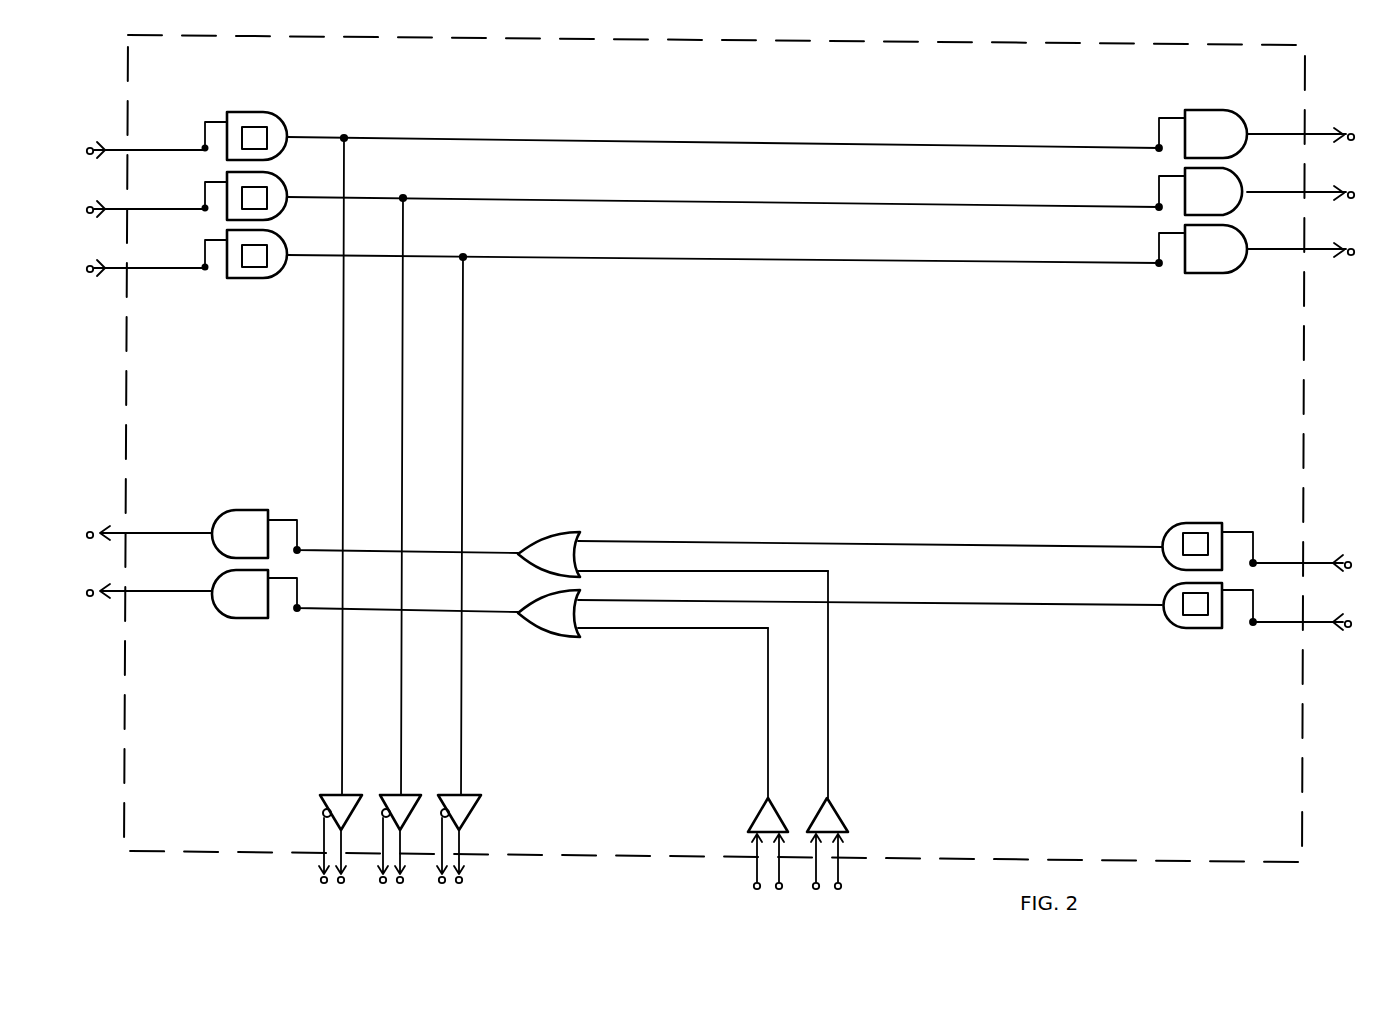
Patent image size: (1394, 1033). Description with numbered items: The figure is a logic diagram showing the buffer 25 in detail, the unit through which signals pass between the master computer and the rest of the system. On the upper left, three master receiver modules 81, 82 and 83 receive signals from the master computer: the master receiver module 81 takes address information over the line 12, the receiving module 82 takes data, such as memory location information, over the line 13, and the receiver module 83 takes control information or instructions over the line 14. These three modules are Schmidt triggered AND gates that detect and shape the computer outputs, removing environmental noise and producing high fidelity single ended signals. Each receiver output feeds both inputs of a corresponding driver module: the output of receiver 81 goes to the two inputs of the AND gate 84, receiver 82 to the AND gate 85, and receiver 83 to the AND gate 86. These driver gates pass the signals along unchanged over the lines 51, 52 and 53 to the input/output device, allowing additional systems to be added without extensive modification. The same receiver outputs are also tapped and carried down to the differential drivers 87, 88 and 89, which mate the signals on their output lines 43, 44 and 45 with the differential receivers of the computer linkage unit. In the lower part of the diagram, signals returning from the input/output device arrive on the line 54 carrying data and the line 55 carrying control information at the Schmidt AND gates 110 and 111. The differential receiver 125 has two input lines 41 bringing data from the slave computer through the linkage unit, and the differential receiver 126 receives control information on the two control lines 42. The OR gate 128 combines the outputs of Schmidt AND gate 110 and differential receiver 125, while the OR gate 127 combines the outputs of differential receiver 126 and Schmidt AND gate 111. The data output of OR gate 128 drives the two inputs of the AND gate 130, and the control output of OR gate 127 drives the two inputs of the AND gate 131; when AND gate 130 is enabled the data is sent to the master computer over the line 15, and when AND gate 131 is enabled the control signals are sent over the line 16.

The line 12 is at (88, 149).
The line 13 is at (88, 209).
The line 14 is at (88, 268).
The line 15 is at (88, 532).
The line 16 is at (88, 590).
The buffer 25 is at (1360, 362).
The input lines 41 is at (822, 891).
The control lines 42 is at (763, 891).
The output line 43 is at (454, 885).
The output line 44 is at (395, 885).
The output line 45 is at (335, 885).
The line 51 is at (1354, 133).
The line 52 is at (1354, 191).
The line 53 is at (1354, 248).
The line 54 is at (1351, 561).
The line 55 is at (1351, 620).
The master receiver module 81 is at (265, 113).
The receiving module 82 is at (267, 176).
The receiver module 83 is at (269, 236).
The AND gate 84 is at (1242, 120).
The AND gate 85 is at (1242, 180).
The AND gate 86 is at (1238, 236).
The differential driver 87 is at (470, 797).
The differential driver 88 is at (410, 797).
The differential driver 89 is at (350, 797).
The Schmidt AND gate 110 is at (1176, 529).
The Schmidt AND gate 111 is at (1176, 592).
The differential receiver 125 is at (840, 797).
The differential receiver 126 is at (780, 797).
The OR gate 127 is at (532, 601).
The OR gate 128 is at (580, 533).
The AND gate 130 is at (221, 519).
The AND gate 131 is at (221, 581).